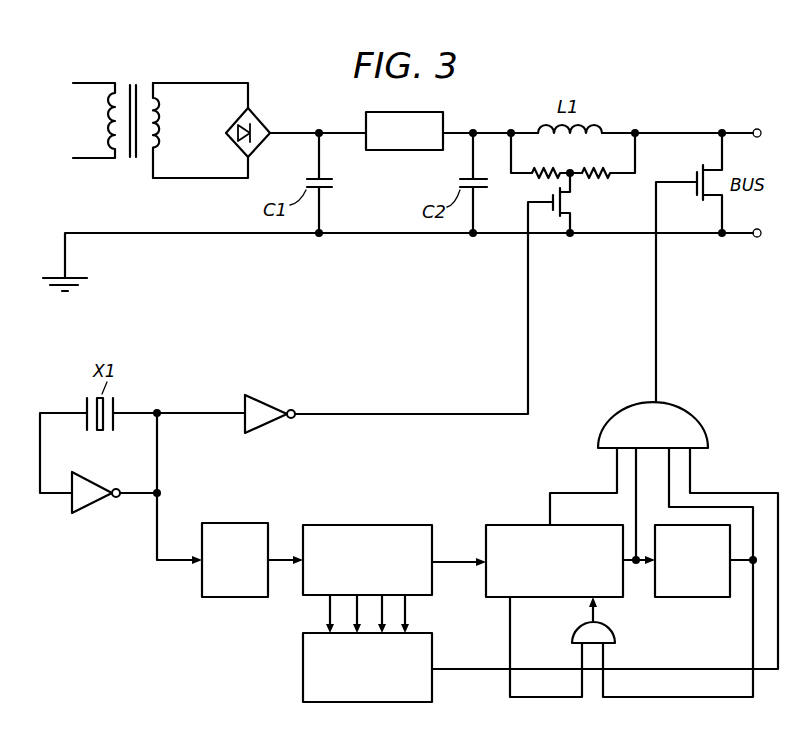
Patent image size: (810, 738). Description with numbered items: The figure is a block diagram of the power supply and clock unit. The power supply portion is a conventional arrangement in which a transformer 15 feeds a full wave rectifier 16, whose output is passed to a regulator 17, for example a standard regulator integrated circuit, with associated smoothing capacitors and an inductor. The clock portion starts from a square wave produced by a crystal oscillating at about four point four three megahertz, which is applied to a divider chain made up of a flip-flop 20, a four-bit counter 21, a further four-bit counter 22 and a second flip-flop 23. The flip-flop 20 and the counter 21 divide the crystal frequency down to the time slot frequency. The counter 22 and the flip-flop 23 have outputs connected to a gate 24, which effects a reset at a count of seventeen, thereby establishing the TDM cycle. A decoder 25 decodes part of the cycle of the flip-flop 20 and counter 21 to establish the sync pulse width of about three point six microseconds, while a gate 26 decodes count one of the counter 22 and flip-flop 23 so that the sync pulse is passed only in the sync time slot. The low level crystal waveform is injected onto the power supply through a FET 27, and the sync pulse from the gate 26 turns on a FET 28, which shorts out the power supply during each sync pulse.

The transformer 15 is at (133, 80).
The full wave rectifier 16 is at (259, 112).
The regulator 17 is at (403, 152).
The flip-flop 20 is at (230, 523).
The 4-bit counter 21 is at (362, 524).
The 4-bit counter 22 is at (510, 524).
The flip-flop 23 is at (693, 598).
The gate 24 is at (612, 636).
The decoder 25 is at (303, 668).
The gate 26 is at (665, 437).
The FET 27 is at (572, 204).
The FET 28 is at (698, 166).